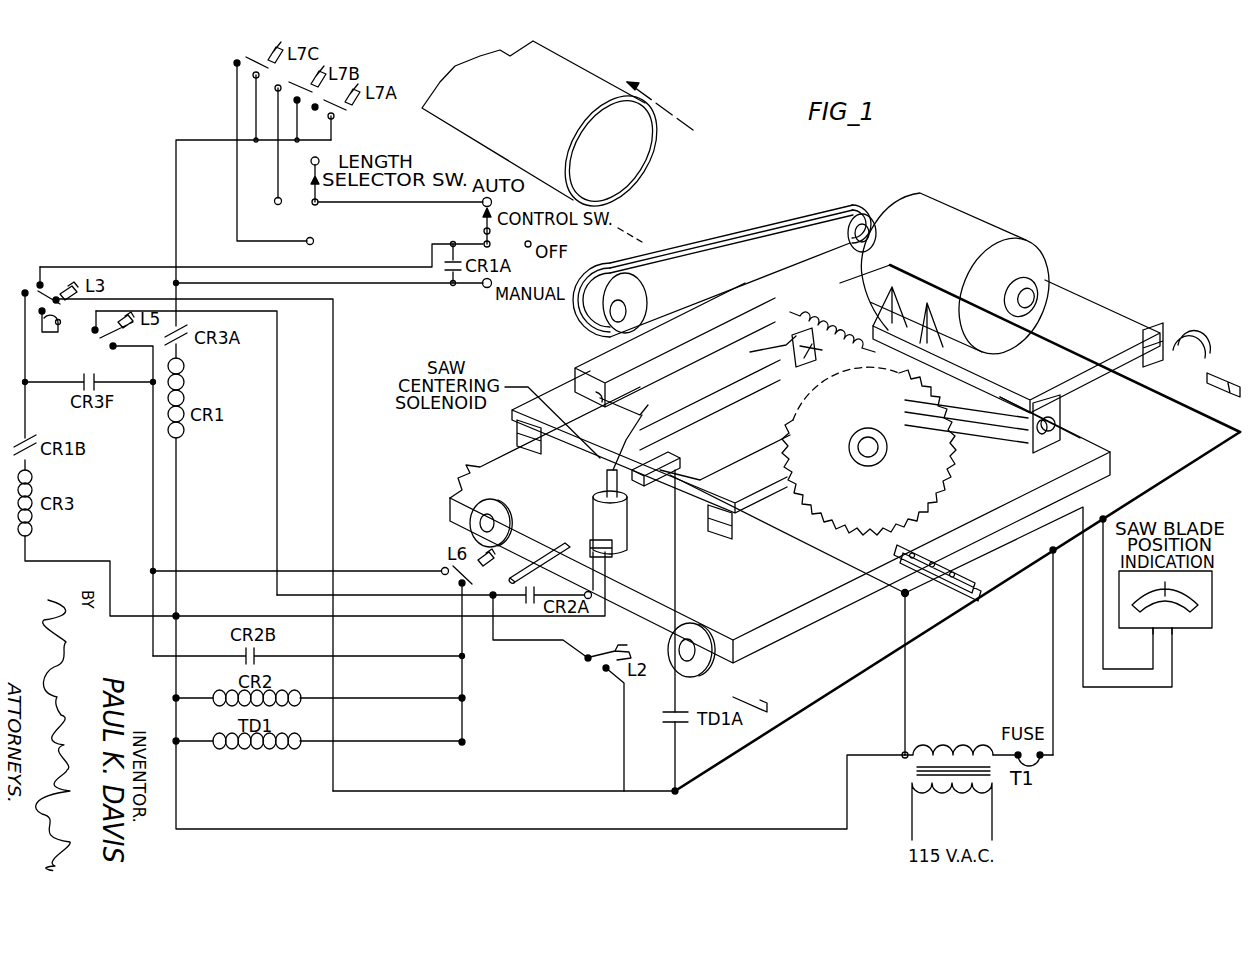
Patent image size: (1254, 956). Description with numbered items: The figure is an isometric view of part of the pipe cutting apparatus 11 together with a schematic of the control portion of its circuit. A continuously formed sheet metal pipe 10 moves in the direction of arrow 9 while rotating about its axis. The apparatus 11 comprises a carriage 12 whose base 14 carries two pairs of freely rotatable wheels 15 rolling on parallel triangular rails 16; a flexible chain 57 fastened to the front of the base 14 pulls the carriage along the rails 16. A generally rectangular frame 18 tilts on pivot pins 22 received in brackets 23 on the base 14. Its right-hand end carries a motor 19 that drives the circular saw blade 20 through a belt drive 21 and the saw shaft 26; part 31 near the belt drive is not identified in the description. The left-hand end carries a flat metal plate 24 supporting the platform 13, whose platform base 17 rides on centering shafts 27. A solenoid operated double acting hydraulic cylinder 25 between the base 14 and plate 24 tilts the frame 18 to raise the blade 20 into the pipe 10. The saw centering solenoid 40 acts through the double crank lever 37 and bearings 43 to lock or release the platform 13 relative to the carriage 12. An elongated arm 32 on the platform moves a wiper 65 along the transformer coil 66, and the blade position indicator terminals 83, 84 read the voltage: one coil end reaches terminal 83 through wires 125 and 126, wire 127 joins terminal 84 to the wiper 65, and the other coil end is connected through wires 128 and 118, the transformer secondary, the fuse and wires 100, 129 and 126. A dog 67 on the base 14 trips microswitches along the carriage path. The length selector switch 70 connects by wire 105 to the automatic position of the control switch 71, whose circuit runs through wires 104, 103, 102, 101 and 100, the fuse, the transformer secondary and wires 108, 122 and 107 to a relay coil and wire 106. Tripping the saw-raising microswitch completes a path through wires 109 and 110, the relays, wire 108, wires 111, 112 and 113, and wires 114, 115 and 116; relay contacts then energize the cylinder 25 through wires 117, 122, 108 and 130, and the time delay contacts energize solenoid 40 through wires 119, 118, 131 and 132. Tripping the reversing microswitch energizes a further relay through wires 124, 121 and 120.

The arrow 9 is at (648, 96).
The sheet metal pipe 10 is at (549, 132).
The cutting apparatus 11 is at (1002, 213).
The carriage 12 is at (796, 632).
The platform 13 is at (580, 359).
The base 14 is at (830, 594).
The wheels 15 is at (1180, 343).
The rails 16 is at (1225, 372).
The platform base 17 is at (675, 345).
The frame 18 is at (516, 428).
The motor 19 is at (963, 280).
The circular saw blade 20 is at (869, 451).
The belt drive 21 is at (718, 250).
The pivot pins 22 is at (1057, 430).
The brackets 23 is at (1043, 450).
The flat metal plate 24 is at (649, 442).
The hydraulic cylinder 25 is at (622, 536).
The saw shaft 26 is at (740, 385).
The centering shafts 27 is at (710, 444).
The pulley 31 is at (640, 305).
The elongated arm 32 is at (755, 350).
The double crank lever 37 is at (620, 425).
The saw centering solenoid 40 is at (668, 492).
The bearings 43 is at (602, 396).
The flexible chain 57 is at (950, 585).
The wiper 65 is at (809, 348).
The transformer coil 66 is at (803, 312).
The dog 67 is at (520, 579).
The length selector switch 70 is at (312, 203).
The control switch 71 is at (483, 231).
The terminal of saw blade position indicator 83 is at (1165, 600).
The terminal of saw blade position indicator 84 is at (1171, 622).
The wire 100 is at (1056, 726).
The wire 101 is at (826, 696).
The wire 102 is at (650, 793).
The wire 103 is at (336, 492).
The wire 104 is at (234, 265).
The wire 105 is at (437, 203).
The wire 106 is at (173, 186).
The wire 107 is at (175, 485).
The wire 108 is at (422, 832).
The wire 109 is at (462, 640).
The wire 110 is at (466, 682).
The wire 111 is at (621, 729).
The wire 112 is at (532, 644).
The wire 113 is at (274, 483).
The wire 114 is at (150, 362).
The wire 115 is at (150, 475).
The wire 116 is at (214, 552).
The wire 117 is at (381, 616).
The wire 118 is at (908, 700).
The wire 119 is at (829, 553).
The wire 120 is at (26, 358).
The wire 121 is at (45, 563).
The wire 122 is at (170, 675).
The wire 124 is at (48, 332).
The wire 125 is at (1211, 415).
The wire 126 is at (1113, 666).
The wire 127 is at (1049, 494).
The wire 128 is at (991, 544).
The wire 129 is at (1068, 543).
The wire 130 is at (600, 618).
The wire 131 is at (678, 757).
The wire 132 is at (679, 578).